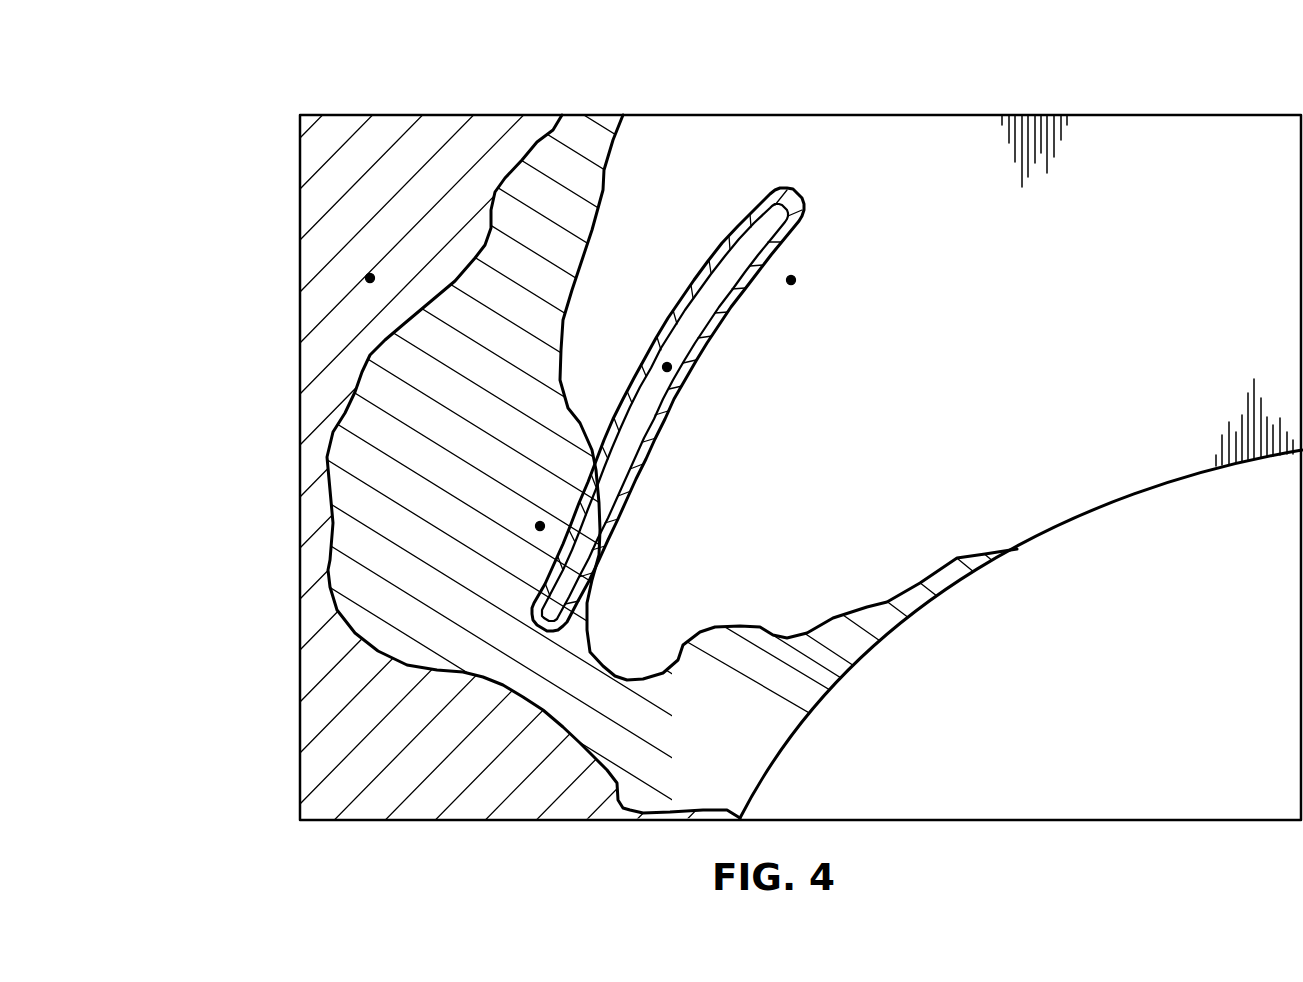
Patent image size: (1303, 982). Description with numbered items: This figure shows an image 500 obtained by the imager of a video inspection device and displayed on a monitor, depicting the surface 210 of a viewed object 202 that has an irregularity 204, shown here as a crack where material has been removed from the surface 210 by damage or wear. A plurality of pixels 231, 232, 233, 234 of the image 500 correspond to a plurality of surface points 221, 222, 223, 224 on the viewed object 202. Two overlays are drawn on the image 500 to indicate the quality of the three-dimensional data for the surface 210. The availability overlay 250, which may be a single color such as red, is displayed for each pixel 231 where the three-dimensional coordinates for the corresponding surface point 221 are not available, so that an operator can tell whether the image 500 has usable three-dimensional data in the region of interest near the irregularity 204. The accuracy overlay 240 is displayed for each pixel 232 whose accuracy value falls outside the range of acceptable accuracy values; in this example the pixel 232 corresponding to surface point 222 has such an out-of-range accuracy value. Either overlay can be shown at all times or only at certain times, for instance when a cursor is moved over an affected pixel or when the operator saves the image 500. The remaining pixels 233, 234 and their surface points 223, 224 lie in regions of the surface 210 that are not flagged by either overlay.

The image 500 is at (768, 115).
The availability overlay 250 is at (315, 158).
The accuracy overlay 240 is at (582, 137).
The irregularity 204 is at (803, 206).
The surface 210 is at (1071, 487).
The viewed object 202 is at (1190, 475).
The surface point 221 is at (277, 274).
The pixel 231 is at (370, 278).
The surface point 222 is at (510, 488).
The pixel 232 is at (540, 525).
The surface point 223 is at (749, 377).
The pixel 233 is at (667, 367).
The surface point 224 is at (874, 291).
The pixel 234 is at (791, 280).